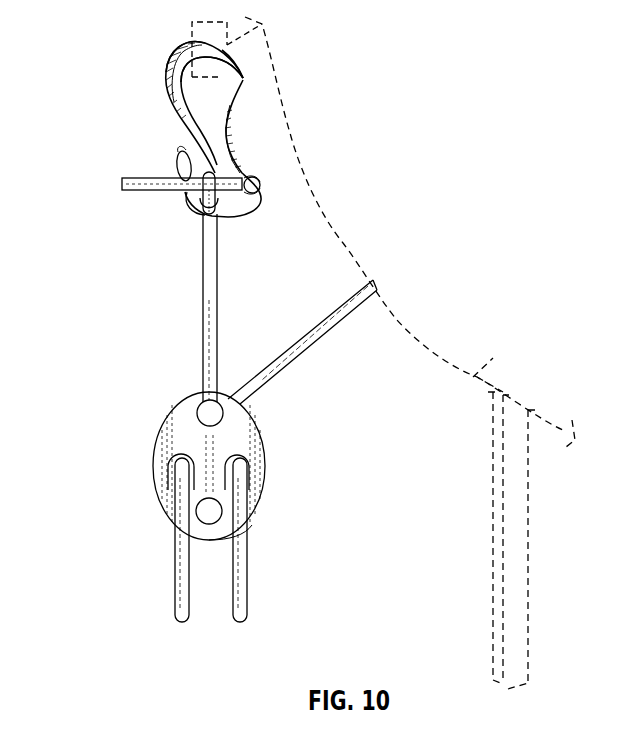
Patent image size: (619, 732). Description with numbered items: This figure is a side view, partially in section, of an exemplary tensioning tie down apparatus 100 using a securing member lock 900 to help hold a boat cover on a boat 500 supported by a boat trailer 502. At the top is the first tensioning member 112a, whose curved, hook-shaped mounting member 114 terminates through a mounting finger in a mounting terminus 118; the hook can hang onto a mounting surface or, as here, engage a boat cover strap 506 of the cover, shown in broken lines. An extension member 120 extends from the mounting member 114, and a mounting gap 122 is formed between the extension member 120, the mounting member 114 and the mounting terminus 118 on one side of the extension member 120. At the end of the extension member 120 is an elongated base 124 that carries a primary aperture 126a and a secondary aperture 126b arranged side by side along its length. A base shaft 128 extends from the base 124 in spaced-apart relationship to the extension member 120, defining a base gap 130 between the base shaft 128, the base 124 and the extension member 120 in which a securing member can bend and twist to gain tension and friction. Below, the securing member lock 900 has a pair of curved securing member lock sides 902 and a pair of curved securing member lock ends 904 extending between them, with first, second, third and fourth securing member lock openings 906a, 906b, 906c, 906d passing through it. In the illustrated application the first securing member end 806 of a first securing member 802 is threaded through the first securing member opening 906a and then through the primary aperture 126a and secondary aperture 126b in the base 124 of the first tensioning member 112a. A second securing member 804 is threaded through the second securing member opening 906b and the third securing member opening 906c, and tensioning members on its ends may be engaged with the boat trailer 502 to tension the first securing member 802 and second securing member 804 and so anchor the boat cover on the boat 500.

The tensioning tie down apparatus 100 is at (88, 28).
The first tensioning member 112a is at (133, 73).
The mounting member 114 is at (178, 62).
The mounting terminus 118 is at (244, 78).
The extension member 120 is at (155, 106).
The mounting gap 122 is at (210, 95).
The base 124 is at (227, 207).
The primary aperture 126a is at (190, 200).
The secondary aperture 126b is at (258, 187).
The base shaft 128 is at (186, 172).
The base gap 130 is at (174, 144).
The boat 500 is at (473, 377).
The boat trailer 502 is at (512, 538).
The boat cover strap 506 is at (262, 23).
The first securing member 802 is at (203, 308).
The second securing member 804 is at (173, 573).
The first securing member end 806 is at (122, 185).
The securing member lock 900 is at (203, 490).
The securing member lock sides 902 is at (154, 438).
The securing member lock ends 904 is at (223, 537).
The first securing member lock opening 906a is at (198, 412).
The second securing member lock opening 906b is at (172, 463).
The third securing member lock opening 906c is at (247, 462).
The fourth securing member lock opening 906d is at (197, 512).